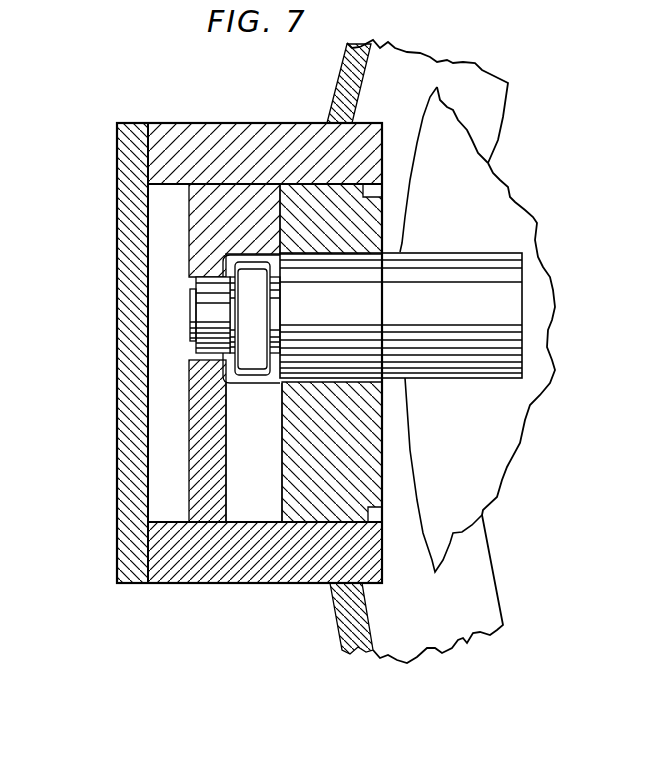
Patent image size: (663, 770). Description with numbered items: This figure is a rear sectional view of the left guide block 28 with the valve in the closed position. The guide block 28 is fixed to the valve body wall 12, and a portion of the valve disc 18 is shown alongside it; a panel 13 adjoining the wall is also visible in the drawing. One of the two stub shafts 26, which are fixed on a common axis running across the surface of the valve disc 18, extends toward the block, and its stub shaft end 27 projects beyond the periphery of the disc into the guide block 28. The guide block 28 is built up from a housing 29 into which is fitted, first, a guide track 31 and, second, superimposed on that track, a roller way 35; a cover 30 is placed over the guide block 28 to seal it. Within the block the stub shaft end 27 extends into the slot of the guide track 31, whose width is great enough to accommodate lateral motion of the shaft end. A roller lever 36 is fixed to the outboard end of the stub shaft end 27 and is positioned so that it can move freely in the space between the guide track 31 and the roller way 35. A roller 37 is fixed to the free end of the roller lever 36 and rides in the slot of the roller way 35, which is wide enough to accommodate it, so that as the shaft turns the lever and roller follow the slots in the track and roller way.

The valve body wall 12 is at (335, 77).
The panel 13 is at (497, 123).
The valve disc 18 is at (537, 212).
The stub shaft 26 is at (418, 252).
The stub shaft end 27 is at (282, 313).
The guide block 28 is at (254, 452).
The housing 29 is at (240, 585).
The cover 30 is at (117, 463).
The guide track 31 is at (345, 255).
The roller way 35 is at (190, 278).
The roller lever 36 is at (253, 372).
The roller 37 is at (190, 318).